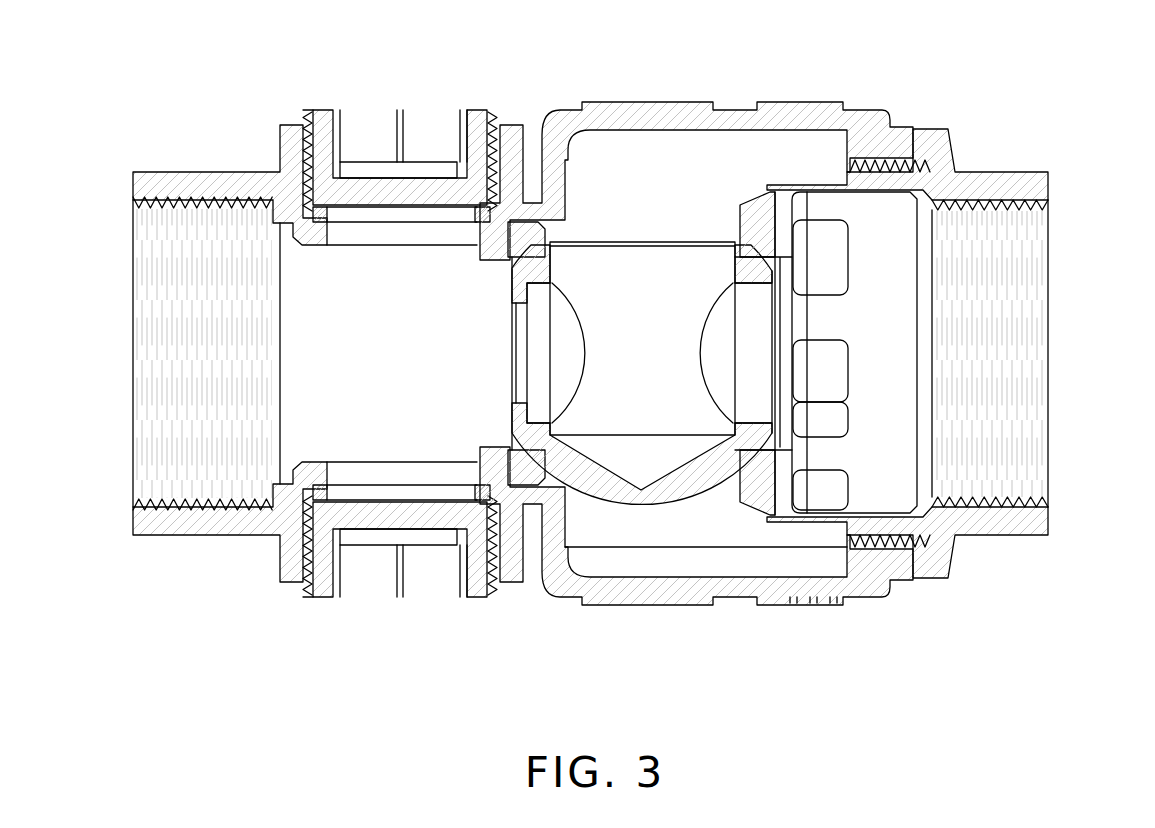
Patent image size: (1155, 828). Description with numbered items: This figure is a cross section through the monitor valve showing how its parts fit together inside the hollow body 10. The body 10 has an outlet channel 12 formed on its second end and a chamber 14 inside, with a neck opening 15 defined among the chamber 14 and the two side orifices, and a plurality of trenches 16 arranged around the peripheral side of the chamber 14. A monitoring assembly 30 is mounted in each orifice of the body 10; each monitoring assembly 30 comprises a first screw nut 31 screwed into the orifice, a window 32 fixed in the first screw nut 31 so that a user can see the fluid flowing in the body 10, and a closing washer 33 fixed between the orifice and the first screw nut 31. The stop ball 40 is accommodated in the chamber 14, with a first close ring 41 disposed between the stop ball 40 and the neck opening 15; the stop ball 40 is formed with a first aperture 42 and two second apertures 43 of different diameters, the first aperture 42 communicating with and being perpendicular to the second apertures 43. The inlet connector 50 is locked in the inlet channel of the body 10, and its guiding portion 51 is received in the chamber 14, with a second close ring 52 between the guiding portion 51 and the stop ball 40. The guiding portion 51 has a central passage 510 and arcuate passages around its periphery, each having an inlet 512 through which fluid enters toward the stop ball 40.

The body 10 is at (590, 354).
The outlet channel 12 is at (162, 330).
The chamber 14 is at (655, 537).
The neck opening 15 is at (497, 360).
The trenches 16 is at (738, 145).
The monitoring assembly 30 is at (380, 108).
The first screw nut 31 is at (477, 152).
The window 32 is at (436, 165).
The closing washer 33 is at (318, 218).
The stop ball 40 is at (590, 503).
The first close ring 41 is at (530, 235).
The first aperture 42 is at (640, 265).
The second apertures 43 is at (745, 363).
The inlet connector 50 is at (1013, 168).
The guiding portion 51 is at (805, 537).
The second close ring 52 is at (765, 235).
The central passage 510 is at (787, 318).
The inlet 512 is at (830, 263).